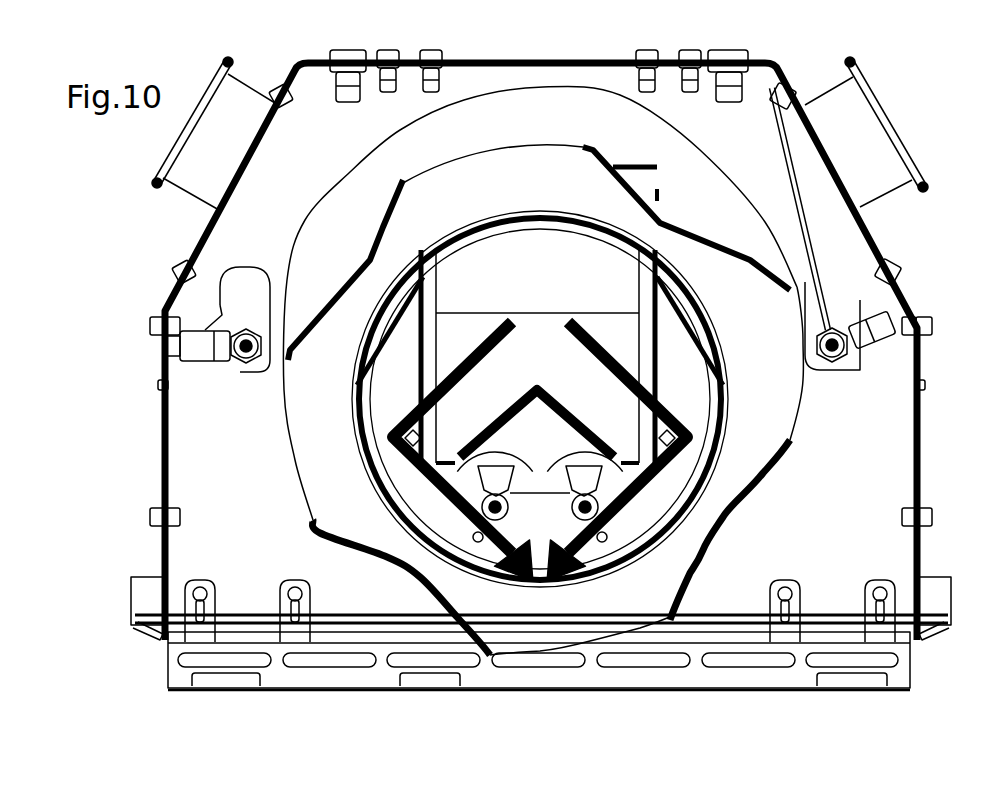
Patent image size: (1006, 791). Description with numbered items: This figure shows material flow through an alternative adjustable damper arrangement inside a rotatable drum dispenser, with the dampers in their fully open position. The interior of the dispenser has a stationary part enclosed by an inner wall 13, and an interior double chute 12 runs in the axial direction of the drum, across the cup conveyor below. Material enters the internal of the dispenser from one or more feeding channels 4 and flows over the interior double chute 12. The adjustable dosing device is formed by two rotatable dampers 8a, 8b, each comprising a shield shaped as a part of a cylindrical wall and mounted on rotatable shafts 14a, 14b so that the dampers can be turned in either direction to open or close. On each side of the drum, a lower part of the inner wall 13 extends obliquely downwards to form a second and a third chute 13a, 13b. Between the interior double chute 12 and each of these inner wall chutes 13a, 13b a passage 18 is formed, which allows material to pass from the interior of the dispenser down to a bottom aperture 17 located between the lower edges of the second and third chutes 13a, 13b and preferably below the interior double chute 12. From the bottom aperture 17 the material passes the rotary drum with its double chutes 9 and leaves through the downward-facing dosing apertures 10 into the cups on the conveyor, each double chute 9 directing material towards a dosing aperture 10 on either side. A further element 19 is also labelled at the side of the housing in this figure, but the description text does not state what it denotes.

The feeding channel 4 is at (540, 399).
The first rotatable damper 8a is at (483, 484).
The second rotatable damper 8b is at (598, 472).
The double chute 9 is at (370, 250).
The dosing aperture 10 is at (527, 183).
The interior double chute 12 is at (523, 400).
The inner wall 13 is at (688, 323).
The second chute 13a is at (465, 513).
The third chute 13b is at (673, 500).
The rotatable shaft 14a is at (478, 542).
The rotatable shaft 14b is at (645, 542).
The bottom aperture 17 is at (535, 612).
The passage 18 is at (393, 432).
The hinge assembly 19 is at (920, 343).